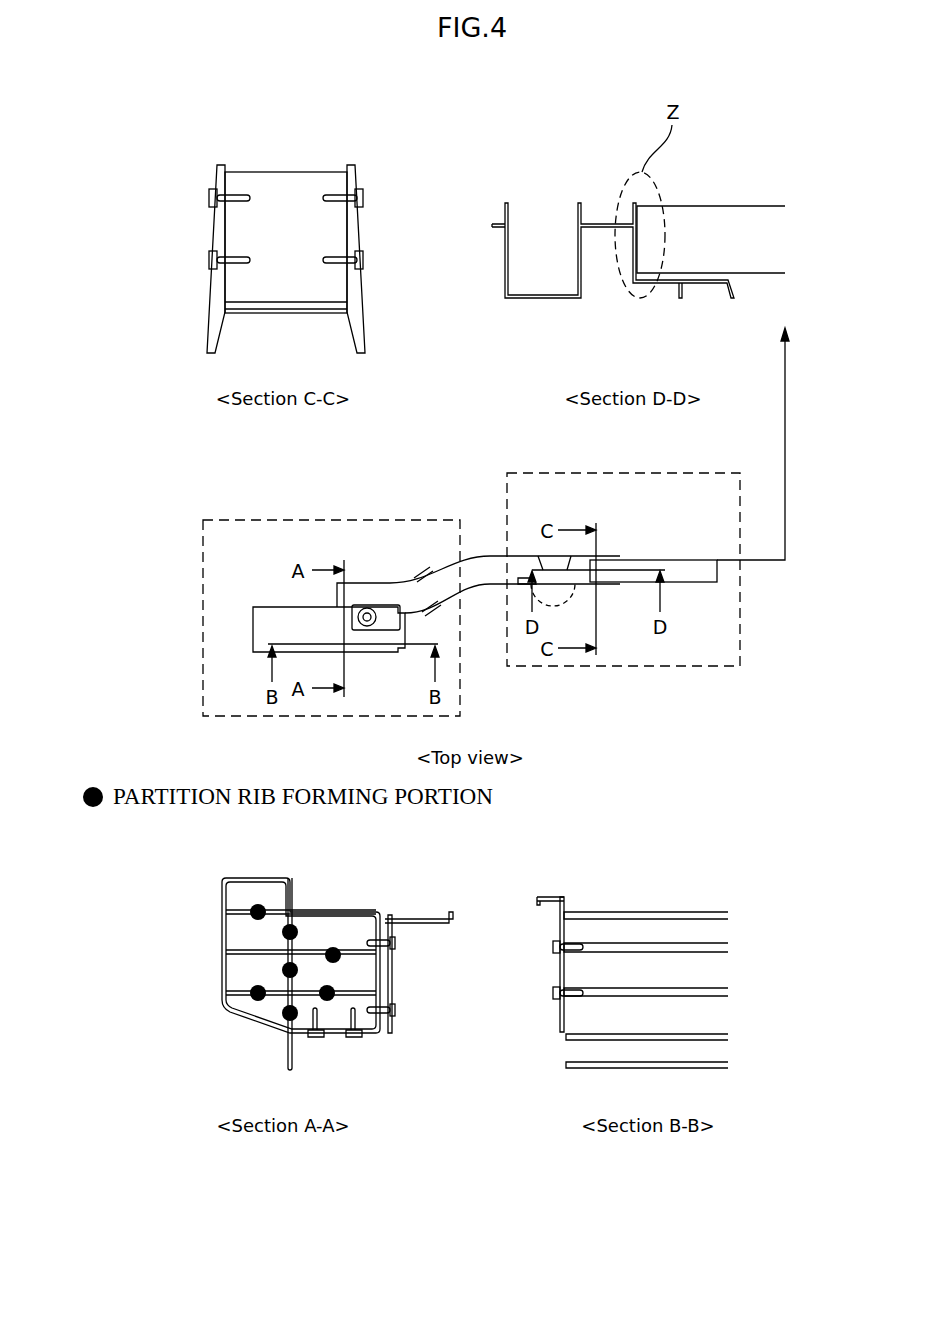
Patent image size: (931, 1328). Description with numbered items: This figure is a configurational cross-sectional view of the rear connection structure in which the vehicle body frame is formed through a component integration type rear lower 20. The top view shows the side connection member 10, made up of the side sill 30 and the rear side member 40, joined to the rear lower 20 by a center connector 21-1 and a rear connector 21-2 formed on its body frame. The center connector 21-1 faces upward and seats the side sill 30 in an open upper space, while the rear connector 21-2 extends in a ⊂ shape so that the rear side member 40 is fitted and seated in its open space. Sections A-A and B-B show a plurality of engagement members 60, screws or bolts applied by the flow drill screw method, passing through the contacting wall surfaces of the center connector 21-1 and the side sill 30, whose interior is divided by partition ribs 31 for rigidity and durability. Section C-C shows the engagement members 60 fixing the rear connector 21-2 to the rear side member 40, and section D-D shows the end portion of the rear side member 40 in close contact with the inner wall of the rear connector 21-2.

The side connection member 10 is at (170, 522).
The rear lower 20 is at (483, 556).
The center connector 21-1 is at (363, 585).
The rear connector 21-2 is at (356, 298).
The side sill 30 is at (268, 610).
The partition rib 31 is at (273, 910).
The rear side member 40 is at (283, 172).
The engagement member 60 is at (205, 257).